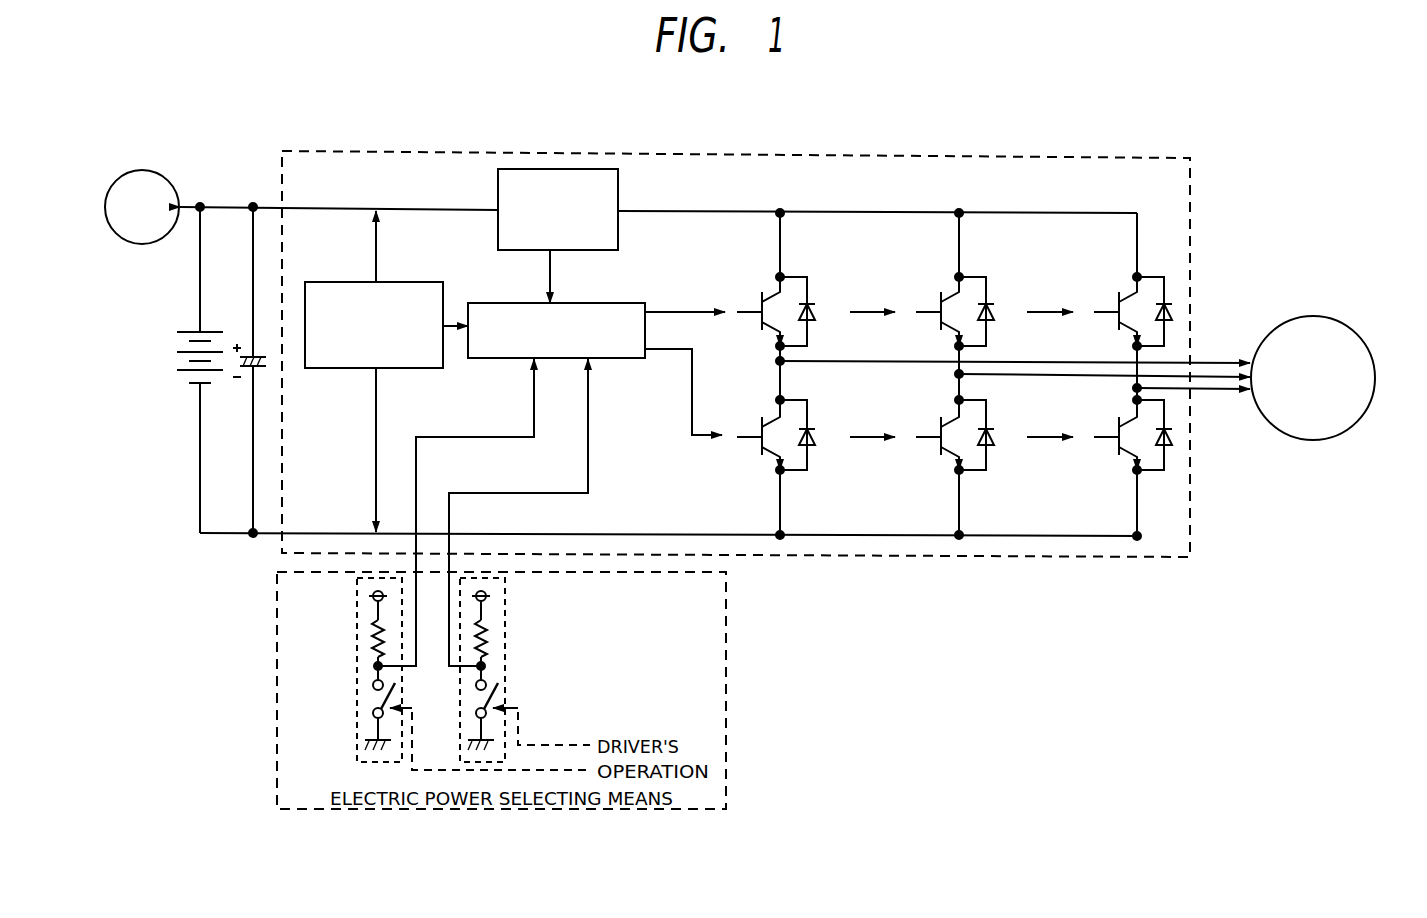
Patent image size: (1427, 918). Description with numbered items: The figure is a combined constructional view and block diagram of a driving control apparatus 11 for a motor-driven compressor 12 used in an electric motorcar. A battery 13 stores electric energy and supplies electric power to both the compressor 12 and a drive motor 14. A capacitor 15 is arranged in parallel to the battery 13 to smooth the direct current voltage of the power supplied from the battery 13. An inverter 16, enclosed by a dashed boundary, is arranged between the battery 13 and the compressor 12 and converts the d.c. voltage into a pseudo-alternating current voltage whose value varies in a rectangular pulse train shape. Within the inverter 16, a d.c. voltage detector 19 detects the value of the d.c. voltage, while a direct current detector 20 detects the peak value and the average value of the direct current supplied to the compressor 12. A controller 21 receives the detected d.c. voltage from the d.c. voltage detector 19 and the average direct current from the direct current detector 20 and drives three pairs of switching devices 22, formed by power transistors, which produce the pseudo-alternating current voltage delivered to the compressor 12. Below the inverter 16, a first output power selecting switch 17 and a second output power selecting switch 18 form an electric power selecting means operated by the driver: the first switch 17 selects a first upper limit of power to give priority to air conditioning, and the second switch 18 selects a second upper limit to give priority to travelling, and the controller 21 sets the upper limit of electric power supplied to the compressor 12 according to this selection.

The driving control apparatus 11 is at (736, 325).
The motor-driven compressor 12 is at (1338, 330).
The battery 13 is at (190, 334).
The drive motor 14 is at (156, 159).
The capacitor 15 is at (241, 339).
The inverter 16 is at (1003, 343).
The first output power selecting switch 17 is at (360, 670).
The second output power selecting switch 18 is at (504, 670).
The d.c. voltage detector 19 is at (386, 307).
The direct current detector 20 is at (578, 234).
The controller 21 is at (561, 313).
The switching devices 22 is at (948, 366).